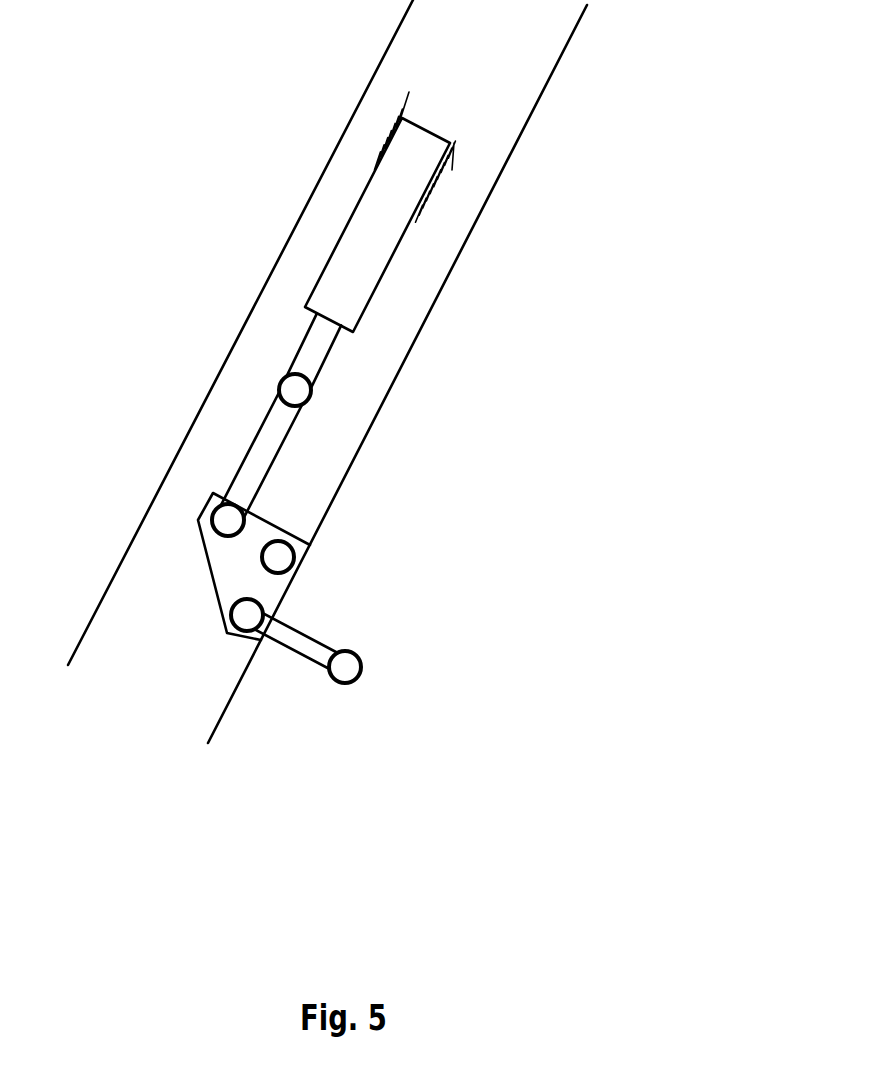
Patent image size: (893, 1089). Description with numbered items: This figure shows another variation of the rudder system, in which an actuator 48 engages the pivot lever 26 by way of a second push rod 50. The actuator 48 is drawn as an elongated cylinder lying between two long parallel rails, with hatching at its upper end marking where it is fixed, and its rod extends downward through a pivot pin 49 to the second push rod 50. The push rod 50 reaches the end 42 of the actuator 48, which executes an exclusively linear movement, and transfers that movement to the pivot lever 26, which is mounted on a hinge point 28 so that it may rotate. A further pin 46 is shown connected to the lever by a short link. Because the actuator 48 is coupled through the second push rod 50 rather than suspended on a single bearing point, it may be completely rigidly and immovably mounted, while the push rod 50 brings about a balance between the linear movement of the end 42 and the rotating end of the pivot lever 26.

The pivot lever 26 is at (263, 587).
The hinge point 28 is at (280, 559).
The end of the actuator 42 is at (232, 518).
The pin 46 is at (305, 652).
The actuator 48 is at (373, 248).
The pivot pin 49 is at (292, 390).
The second push rod 50 is at (272, 437).